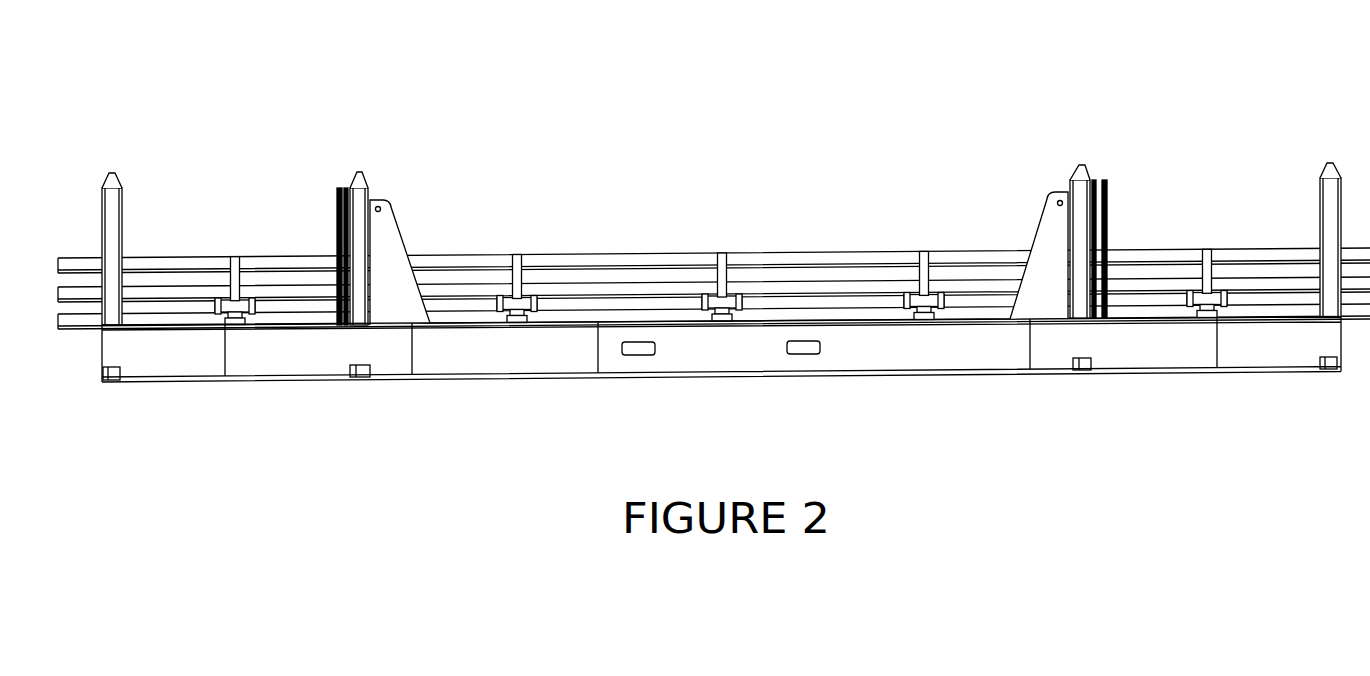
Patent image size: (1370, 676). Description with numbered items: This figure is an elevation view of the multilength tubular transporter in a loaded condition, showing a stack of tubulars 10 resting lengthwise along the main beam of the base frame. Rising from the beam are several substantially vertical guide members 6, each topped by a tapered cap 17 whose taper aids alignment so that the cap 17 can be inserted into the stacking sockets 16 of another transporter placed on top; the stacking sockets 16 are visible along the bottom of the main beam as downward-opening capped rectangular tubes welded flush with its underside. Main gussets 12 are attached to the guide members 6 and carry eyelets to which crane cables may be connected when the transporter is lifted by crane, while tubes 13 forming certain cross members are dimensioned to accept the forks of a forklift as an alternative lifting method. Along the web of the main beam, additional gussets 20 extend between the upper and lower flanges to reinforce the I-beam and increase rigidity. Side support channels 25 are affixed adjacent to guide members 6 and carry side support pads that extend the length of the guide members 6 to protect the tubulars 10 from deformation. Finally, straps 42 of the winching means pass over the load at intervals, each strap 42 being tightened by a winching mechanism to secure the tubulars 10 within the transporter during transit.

The guide member 6 is at (123, 213).
The tubulars 10 is at (557, 255).
The main gusset 12 is at (392, 250).
The tube 13 is at (637, 355).
The stacking socket 16 is at (360, 370).
The tapered cap 17 is at (113, 172).
The gusset 20 is at (225, 352).
The side support channel 25 is at (336, 188).
The strap 42 is at (721, 253).